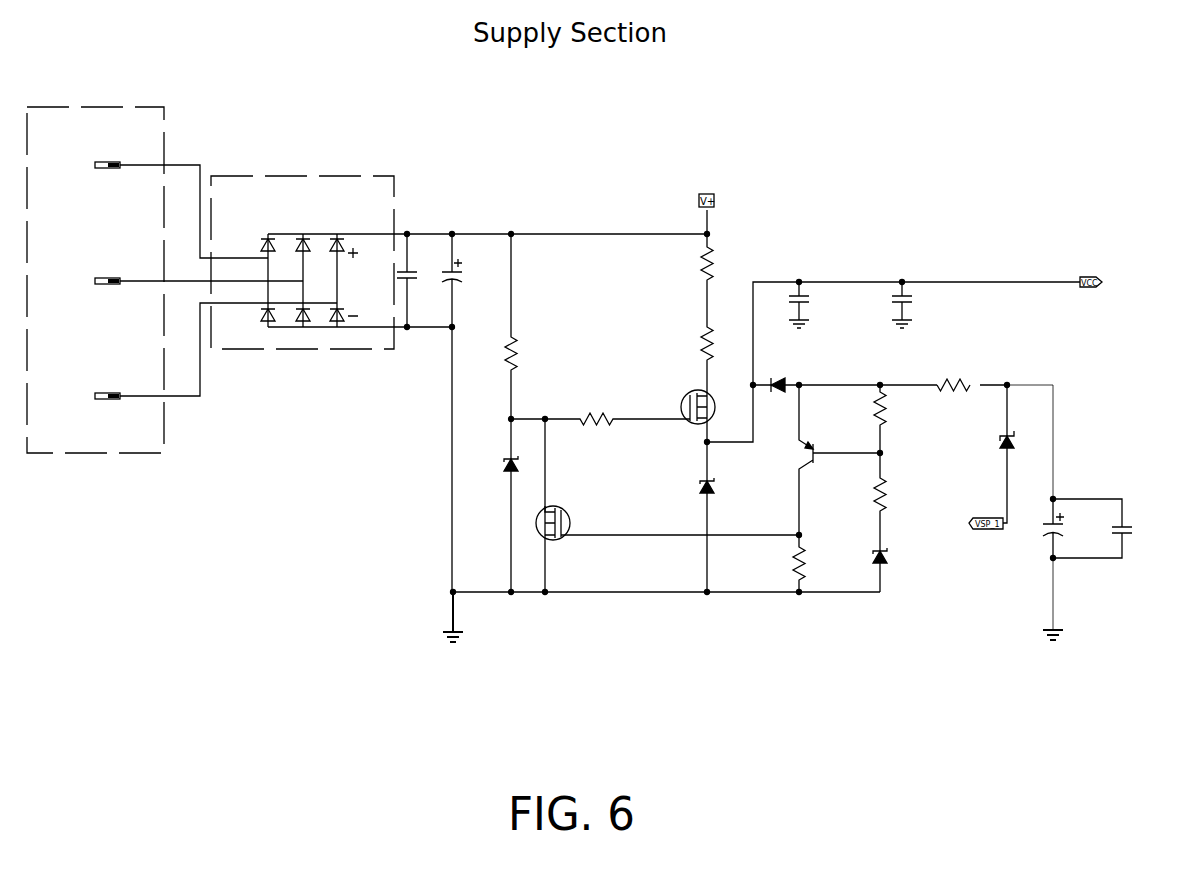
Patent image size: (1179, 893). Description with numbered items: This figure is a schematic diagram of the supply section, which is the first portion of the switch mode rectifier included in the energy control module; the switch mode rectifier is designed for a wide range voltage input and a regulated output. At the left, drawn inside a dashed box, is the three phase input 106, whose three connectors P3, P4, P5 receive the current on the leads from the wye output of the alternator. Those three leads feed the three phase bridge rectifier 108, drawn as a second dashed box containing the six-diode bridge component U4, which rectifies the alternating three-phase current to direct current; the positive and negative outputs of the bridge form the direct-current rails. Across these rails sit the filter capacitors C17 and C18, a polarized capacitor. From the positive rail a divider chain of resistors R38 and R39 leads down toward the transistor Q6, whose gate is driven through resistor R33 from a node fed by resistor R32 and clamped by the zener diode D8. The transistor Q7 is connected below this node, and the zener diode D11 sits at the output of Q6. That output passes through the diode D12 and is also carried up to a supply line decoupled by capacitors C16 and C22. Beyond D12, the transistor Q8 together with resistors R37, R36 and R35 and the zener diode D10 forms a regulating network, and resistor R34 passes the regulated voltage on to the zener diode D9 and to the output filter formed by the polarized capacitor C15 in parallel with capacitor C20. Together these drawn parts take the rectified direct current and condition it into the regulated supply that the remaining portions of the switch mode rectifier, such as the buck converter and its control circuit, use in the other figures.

The three phase input 106 is at (182, 248).
The three phase bridge rectifier 108 is at (368, 231).
The bridge rectifier diode array U4 is at (345, 278).
The connector P3 is at (175, 202).
The connector P4 is at (193, 273).
The connector P5 is at (210, 351).
The capacitor C17 is at (416, 280).
The electrolytic capacitor C18 is at (461, 280).
The resistor R38 is at (718, 267).
The resistor R39 is at (718, 345).
The resistor R32 is at (523, 326).
The resistor R33 is at (597, 414).
The MOSFET Q6 is at (691, 416).
The MOSFET Q7 is at (667, 505).
The transistor Q8 is at (835, 460).
The zener diode D8 is at (506, 505).
The zener diode D11 is at (702, 517).
The diode D12 is at (773, 392).
The zener diode D10 is at (875, 561).
The zener diode D9 is at (1001, 454).
The resistor R35 is at (811, 563).
The resistor R36 is at (891, 491).
The resistor R37 is at (891, 419).
The resistor R34 is at (953, 380).
The capacitor C16 is at (808, 305).
The capacitor C22 is at (911, 305).
The electrolytic capacitor C15 is at (1063, 528).
The capacitor C20 is at (1104, 528).